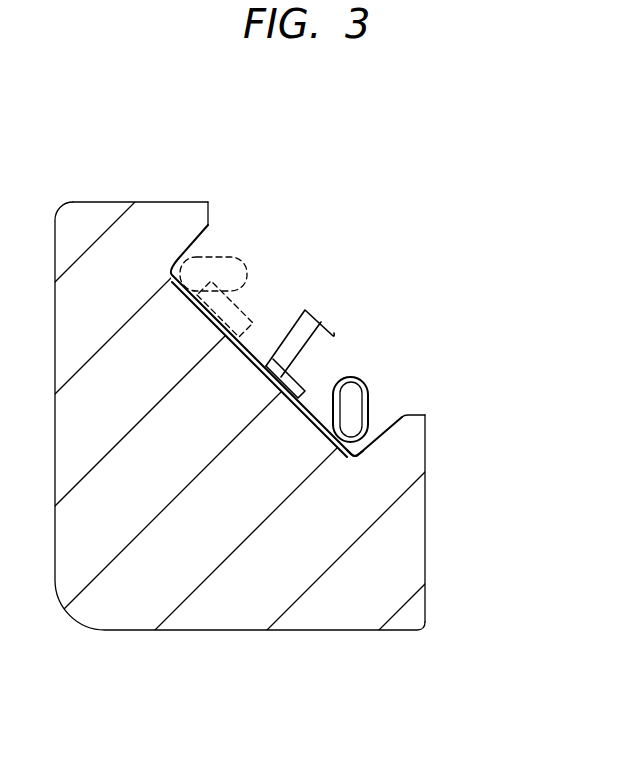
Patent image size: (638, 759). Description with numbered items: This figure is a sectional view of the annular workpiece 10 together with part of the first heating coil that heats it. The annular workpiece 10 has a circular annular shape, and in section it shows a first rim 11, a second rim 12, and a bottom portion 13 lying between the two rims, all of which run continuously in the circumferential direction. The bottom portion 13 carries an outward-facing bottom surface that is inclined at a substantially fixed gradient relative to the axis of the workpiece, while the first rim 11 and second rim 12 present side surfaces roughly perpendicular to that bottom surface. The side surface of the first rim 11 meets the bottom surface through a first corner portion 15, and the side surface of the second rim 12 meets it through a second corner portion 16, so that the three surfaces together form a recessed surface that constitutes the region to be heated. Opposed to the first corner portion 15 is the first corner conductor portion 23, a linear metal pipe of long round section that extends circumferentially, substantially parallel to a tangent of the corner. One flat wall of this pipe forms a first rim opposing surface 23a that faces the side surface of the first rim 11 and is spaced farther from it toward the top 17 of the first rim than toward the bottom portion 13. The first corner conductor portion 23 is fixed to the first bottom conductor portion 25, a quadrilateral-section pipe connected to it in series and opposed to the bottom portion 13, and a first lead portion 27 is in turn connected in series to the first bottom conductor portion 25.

The annular workpiece 10 is at (87, 202).
The first rim 11 is at (425, 442).
The second rim 12 is at (185, 202).
The bottom portion 13 is at (241, 310).
The first corner portion 15 is at (352, 460).
The second corner portion 16 is at (168, 273).
The top of the first rim 17 is at (211, 216).
The first corner conductor portion 23 is at (417, 349).
The first rim opposing surface 23a is at (370, 392).
The first bottom conductor portion 25 is at (353, 376).
The first lead portion 27 is at (292, 328).